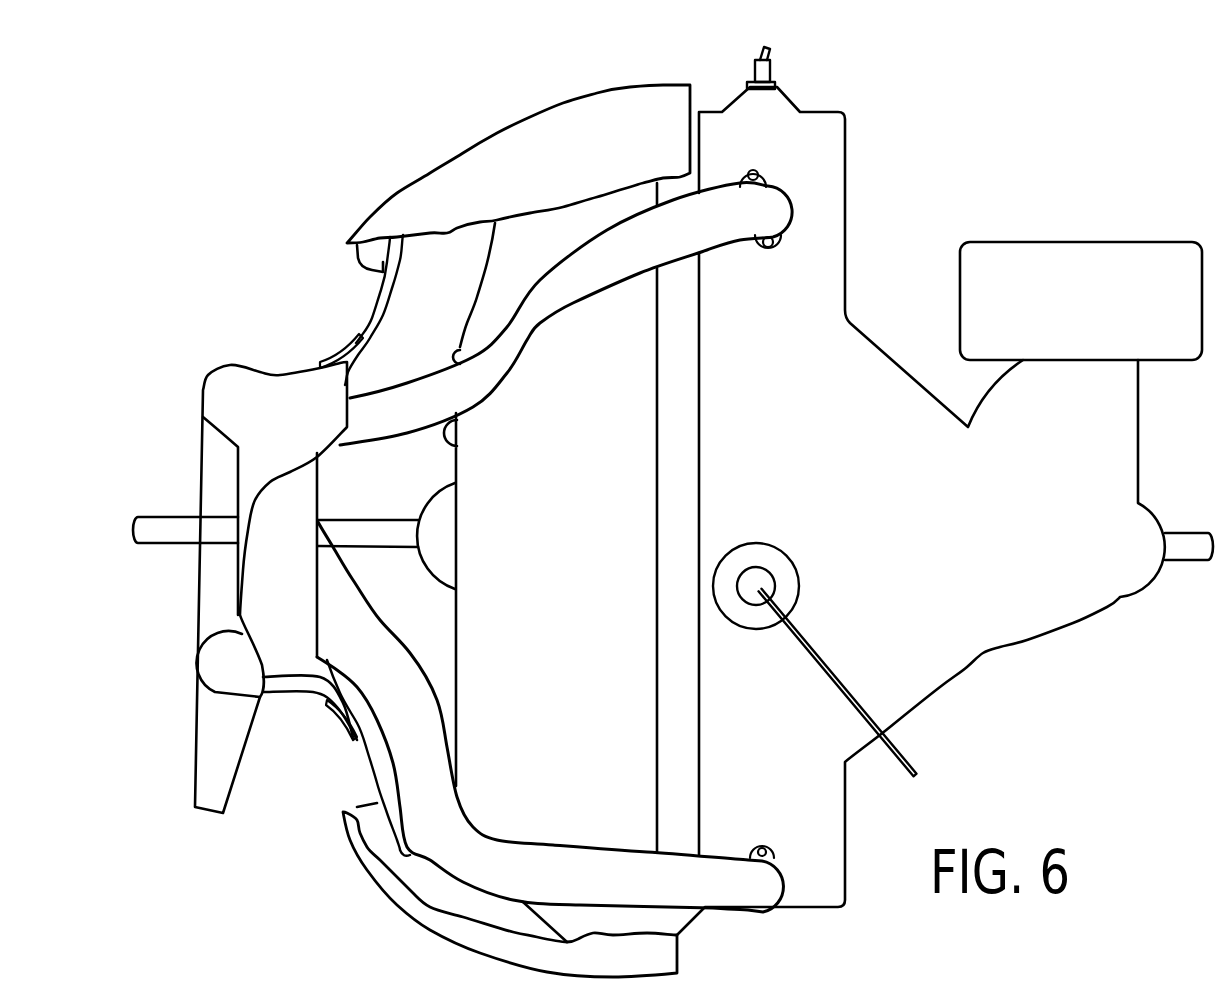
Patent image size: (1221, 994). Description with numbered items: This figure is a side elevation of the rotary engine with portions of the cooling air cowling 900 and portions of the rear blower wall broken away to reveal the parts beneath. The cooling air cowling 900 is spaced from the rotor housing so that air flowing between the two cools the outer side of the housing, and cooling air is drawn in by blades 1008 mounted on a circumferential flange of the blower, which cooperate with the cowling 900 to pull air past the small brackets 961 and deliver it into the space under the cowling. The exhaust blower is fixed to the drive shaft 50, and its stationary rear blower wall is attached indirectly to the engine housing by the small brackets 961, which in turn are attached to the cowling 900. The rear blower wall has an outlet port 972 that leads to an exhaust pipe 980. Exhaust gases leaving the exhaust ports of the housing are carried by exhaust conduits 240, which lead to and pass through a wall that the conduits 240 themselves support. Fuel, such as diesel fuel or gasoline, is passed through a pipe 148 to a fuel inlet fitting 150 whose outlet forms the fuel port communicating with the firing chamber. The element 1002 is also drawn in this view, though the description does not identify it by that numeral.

The drive shaft 50 is at (403, 520).
The pipe 148 is at (838, 670).
The fuel inlet fitting 150 is at (773, 67).
The exhaust conduit 240 is at (738, 233).
The cooling air cowling 900 is at (388, 174).
The small brackets 961 is at (352, 348).
The outlet port 972 is at (230, 683).
The exhaust pipe 980 is at (193, 731).
The box 1002 is at (958, 280).
The blades 1008 is at (372, 237).